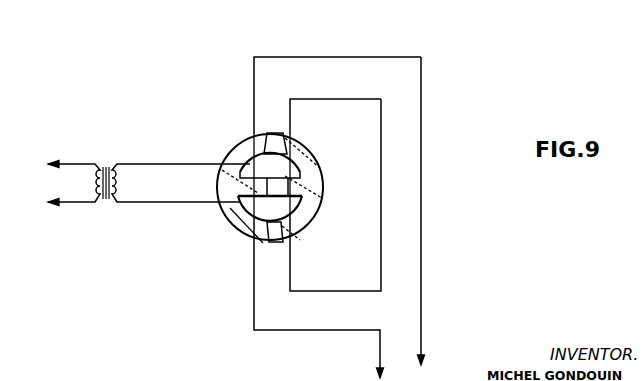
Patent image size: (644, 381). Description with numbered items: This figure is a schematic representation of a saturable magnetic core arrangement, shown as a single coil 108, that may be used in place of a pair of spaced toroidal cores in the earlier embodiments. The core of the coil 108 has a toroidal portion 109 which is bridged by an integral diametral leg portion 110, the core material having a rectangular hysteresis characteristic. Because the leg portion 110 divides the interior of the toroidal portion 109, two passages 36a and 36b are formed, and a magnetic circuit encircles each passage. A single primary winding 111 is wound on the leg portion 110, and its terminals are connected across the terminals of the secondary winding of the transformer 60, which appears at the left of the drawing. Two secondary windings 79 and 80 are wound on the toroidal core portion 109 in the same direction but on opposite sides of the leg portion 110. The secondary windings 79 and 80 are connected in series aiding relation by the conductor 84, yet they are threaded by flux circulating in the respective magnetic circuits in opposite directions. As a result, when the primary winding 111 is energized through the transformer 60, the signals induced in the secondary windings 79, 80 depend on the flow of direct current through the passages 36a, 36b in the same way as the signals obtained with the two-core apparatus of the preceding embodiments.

The transformer 60 is at (108, 162).
The coil 108 is at (248, 152).
The passage 36a is at (258, 168).
The passage 36b is at (265, 210).
The diametral leg portion 110 is at (303, 186).
The primary winding 111 is at (296, 172).
The toroidal portion 109 is at (240, 210).
The secondary winding 79 is at (281, 132).
The secondary winding 80 is at (263, 243).
The conductor 84 is at (421, 213).